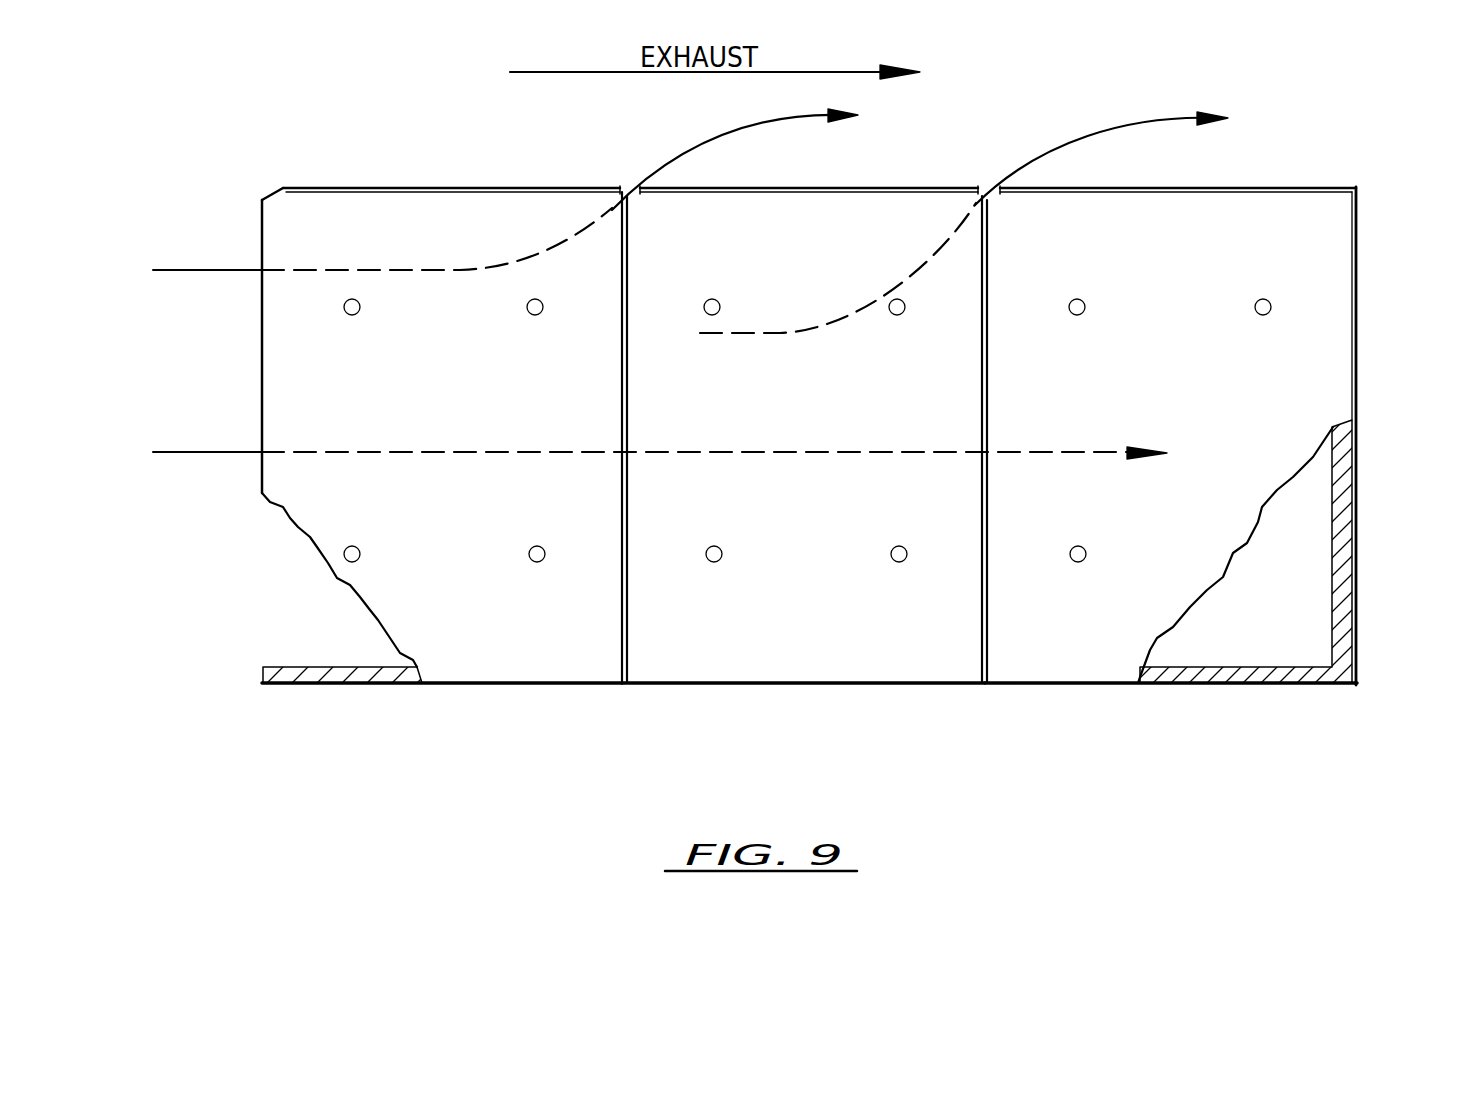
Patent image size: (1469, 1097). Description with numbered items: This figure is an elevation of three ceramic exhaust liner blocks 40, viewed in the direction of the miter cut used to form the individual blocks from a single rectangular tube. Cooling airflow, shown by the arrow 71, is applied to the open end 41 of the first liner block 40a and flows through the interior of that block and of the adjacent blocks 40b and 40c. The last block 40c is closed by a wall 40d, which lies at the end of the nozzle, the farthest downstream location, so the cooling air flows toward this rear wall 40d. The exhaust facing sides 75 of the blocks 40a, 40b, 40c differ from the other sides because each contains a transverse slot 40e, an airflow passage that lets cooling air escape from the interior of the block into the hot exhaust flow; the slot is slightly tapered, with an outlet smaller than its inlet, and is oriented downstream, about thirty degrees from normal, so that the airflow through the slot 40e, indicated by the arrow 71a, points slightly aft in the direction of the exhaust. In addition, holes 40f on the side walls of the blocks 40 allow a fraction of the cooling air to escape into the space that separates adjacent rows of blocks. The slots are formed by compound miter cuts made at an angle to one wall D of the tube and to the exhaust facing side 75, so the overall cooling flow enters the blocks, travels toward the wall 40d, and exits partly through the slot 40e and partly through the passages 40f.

The open end 41 is at (262, 202).
The exhaust facing side 75 is at (470, 184).
The liner block 40a is at (280, 362).
The liner block 40b is at (806, 670).
The liner block 40c is at (1105, 670).
The wall 40d is at (1357, 645).
The liner block 40 is at (470, 345).
The transverse slot 40e is at (638, 193).
The hole 40f is at (357, 313).
The arrow 71a is at (782, 124).
The arrow 71 is at (838, 450).
The wall D is at (873, 692).